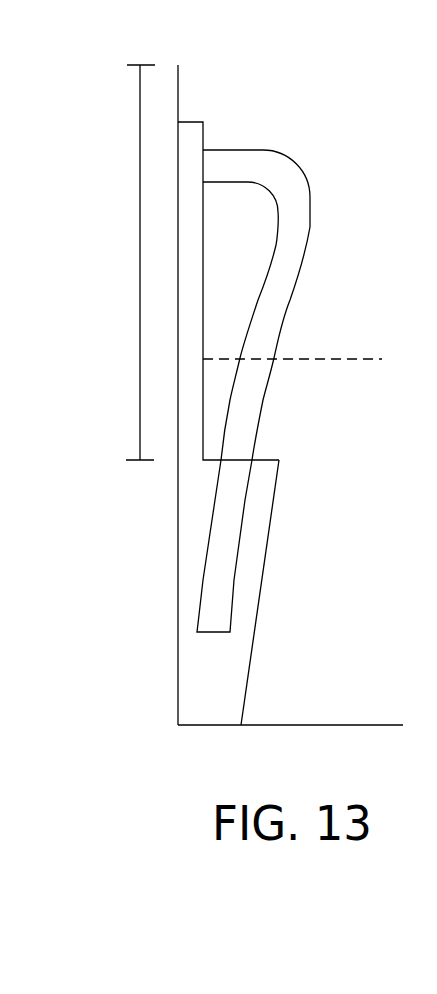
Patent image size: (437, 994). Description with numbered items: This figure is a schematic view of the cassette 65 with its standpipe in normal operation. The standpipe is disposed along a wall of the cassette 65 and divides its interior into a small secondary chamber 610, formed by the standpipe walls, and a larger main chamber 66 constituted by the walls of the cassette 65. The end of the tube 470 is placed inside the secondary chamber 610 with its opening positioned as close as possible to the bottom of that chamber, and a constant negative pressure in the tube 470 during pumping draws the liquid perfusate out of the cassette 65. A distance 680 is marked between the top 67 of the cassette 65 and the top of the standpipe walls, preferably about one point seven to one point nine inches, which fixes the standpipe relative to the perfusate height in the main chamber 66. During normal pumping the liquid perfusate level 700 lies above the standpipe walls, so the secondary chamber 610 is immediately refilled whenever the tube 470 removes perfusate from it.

The cassette 65 is at (107, 113).
The main chamber 66 is at (290, 592).
The top of the cassette 67 is at (178, 78).
The tube 470 is at (280, 153).
The secondary chamber 610 is at (190, 535).
The distance 680 is at (140, 300).
The liquid perfusate level 700 is at (392, 358).